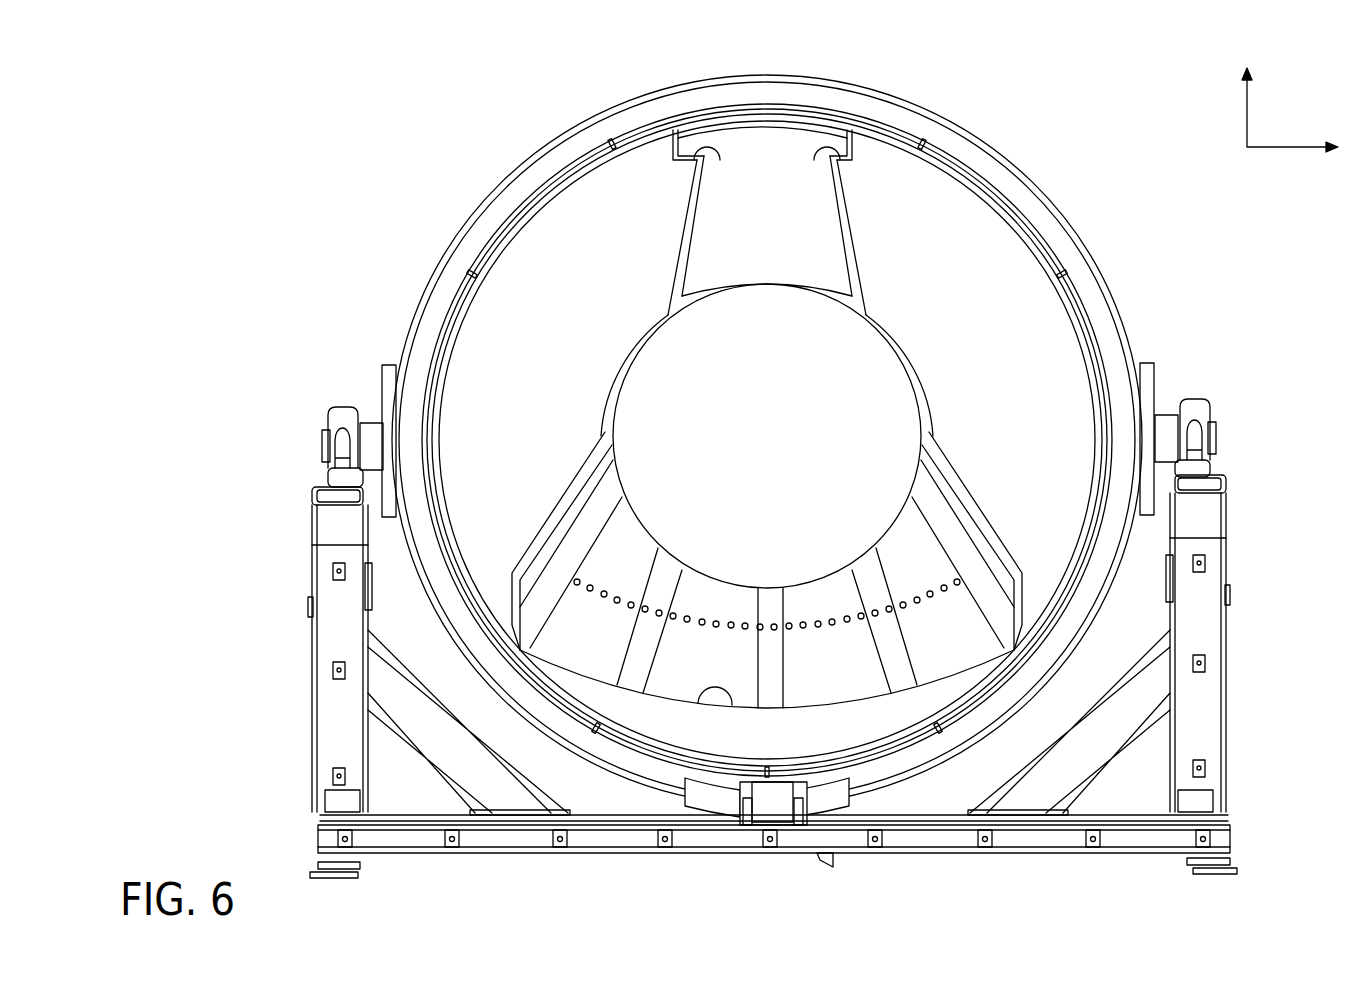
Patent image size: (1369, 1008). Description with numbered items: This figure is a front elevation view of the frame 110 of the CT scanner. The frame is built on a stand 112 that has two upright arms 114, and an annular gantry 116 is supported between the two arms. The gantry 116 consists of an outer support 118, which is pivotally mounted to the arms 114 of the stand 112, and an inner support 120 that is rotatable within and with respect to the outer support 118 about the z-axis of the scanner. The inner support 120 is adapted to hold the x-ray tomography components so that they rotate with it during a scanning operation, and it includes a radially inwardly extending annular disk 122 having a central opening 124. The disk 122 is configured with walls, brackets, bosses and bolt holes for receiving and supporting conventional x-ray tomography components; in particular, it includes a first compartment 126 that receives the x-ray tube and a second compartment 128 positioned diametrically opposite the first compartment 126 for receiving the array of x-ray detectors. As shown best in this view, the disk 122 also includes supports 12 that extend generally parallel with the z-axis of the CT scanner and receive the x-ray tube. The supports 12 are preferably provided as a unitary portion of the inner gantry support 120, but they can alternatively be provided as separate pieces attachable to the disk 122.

The transport and storage apparatus 110 is at (1073, 165).
The stand 112 is at (1033, 860).
The arms 114 is at (330, 662).
The annular gantry 116 is at (952, 118).
The outer support 118 is at (833, 83).
The inner support 120 is at (748, 117).
The annular disk 122 is at (1035, 320).
The central opening 124 is at (884, 343).
The first compartment 126 is at (852, 246).
The second compartment 128 is at (699, 703).
The supports 12 is at (720, 152).